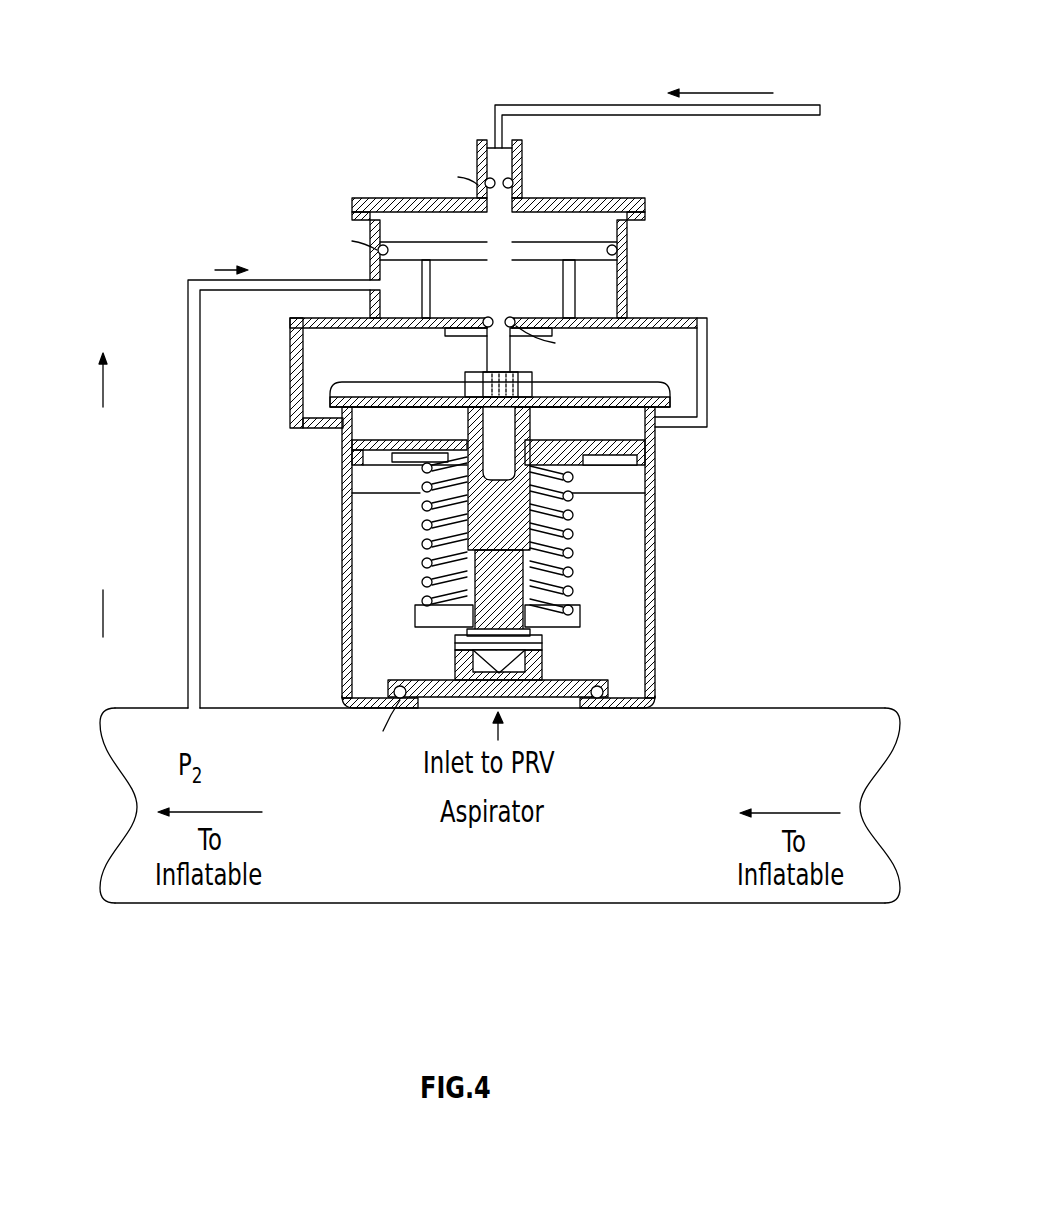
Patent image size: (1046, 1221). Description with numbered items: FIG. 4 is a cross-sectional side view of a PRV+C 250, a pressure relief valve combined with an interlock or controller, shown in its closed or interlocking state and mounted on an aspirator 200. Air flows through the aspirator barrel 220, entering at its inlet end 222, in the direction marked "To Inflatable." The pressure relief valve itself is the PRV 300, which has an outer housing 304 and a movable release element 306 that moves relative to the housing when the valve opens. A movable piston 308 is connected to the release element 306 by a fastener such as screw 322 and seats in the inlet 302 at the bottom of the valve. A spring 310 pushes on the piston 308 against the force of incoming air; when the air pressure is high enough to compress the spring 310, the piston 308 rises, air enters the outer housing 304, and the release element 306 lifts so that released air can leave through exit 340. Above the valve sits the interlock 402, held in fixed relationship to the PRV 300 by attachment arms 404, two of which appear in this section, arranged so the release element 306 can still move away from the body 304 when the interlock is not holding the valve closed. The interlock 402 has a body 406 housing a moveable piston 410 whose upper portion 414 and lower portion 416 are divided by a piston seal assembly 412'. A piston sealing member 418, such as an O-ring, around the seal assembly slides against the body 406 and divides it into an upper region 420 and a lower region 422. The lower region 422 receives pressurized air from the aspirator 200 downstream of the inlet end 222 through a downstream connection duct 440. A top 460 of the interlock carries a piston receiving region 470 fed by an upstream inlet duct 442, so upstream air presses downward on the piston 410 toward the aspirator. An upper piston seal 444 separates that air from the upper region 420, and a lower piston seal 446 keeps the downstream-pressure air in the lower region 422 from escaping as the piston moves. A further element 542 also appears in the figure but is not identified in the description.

The PRV+C 250 is at (131, 38).
The aspirator 200 is at (500, 805).
The aspirator barrel 220 is at (725, 897).
The inlet end 222 is at (262, 897).
The PRV 300 is at (655, 498).
The inlet 302 is at (545, 708).
The outer housing 304 is at (630, 605).
The movable release element 306 is at (330, 378).
The movable piston 308 is at (510, 590).
The spring 310 is at (430, 546).
The screw 322 is at (510, 383).
The exit 340 is at (343, 427).
The interlock 402 is at (627, 285).
The attachment arms 404 is at (707, 347).
The body 406 is at (497, 203).
The moveable piston 410 is at (497, 290).
The piston seal assembly 412' is at (564, 203).
The upper portion 414 is at (495, 240).
The lower portion 416 is at (497, 347).
The piston sealing member 418 is at (627, 250).
The upper region 420 is at (395, 217).
The lower region 422 is at (597, 306).
The downstream connection duct 440 is at (187, 653).
The upstream inlet duct 442 is at (793, 105).
The upper piston seal 444 is at (477, 152).
The lower piston seal 446 is at (460, 338).
The top 460 is at (645, 205).
The piston receiving region 470 is at (488, 140).
The rib 542 is at (577, 298).